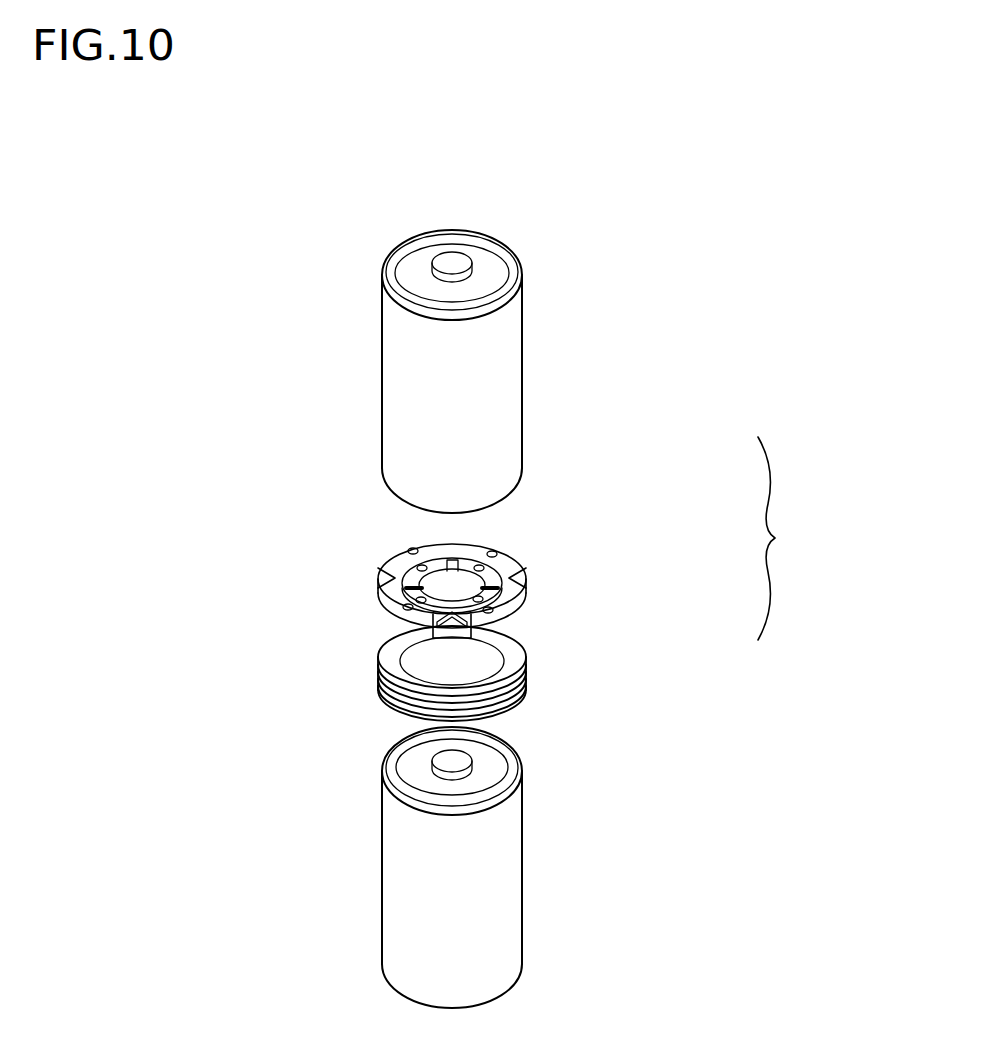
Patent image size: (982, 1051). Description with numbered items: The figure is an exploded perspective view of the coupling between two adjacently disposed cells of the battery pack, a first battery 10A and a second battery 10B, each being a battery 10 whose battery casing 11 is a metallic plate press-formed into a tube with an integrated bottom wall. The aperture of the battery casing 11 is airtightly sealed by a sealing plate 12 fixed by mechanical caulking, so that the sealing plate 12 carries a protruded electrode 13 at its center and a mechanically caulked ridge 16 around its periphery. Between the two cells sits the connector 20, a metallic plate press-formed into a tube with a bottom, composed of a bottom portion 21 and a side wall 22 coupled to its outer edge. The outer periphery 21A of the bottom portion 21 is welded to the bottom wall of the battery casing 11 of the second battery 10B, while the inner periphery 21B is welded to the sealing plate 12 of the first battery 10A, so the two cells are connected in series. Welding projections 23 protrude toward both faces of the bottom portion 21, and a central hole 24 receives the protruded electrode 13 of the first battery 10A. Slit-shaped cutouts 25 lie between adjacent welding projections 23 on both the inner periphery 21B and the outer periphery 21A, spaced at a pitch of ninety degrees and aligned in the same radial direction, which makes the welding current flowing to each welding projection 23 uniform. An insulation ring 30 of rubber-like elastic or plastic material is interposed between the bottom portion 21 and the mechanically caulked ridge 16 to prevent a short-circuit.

The battery 10 is at (828, 538).
The first battery 10A is at (606, 840).
The second battery 10B is at (576, 418).
The battery casing 11 is at (478, 378).
The sealing plate 12 is at (411, 763).
The protruded electrode 13 is at (452, 765).
The caulking ridge 16 is at (505, 745).
The connector 20 is at (344, 547).
The bottom portion 21 is at (637, 453).
The outer periphery 21A is at (507, 563).
The inner periphery 21B is at (503, 545).
The side wall 22 is at (392, 613).
The welding projection 23 is at (443, 575).
The central hole 24 is at (449, 563).
The cutout 25 is at (362, 598).
The insulation ring 30 is at (333, 683).